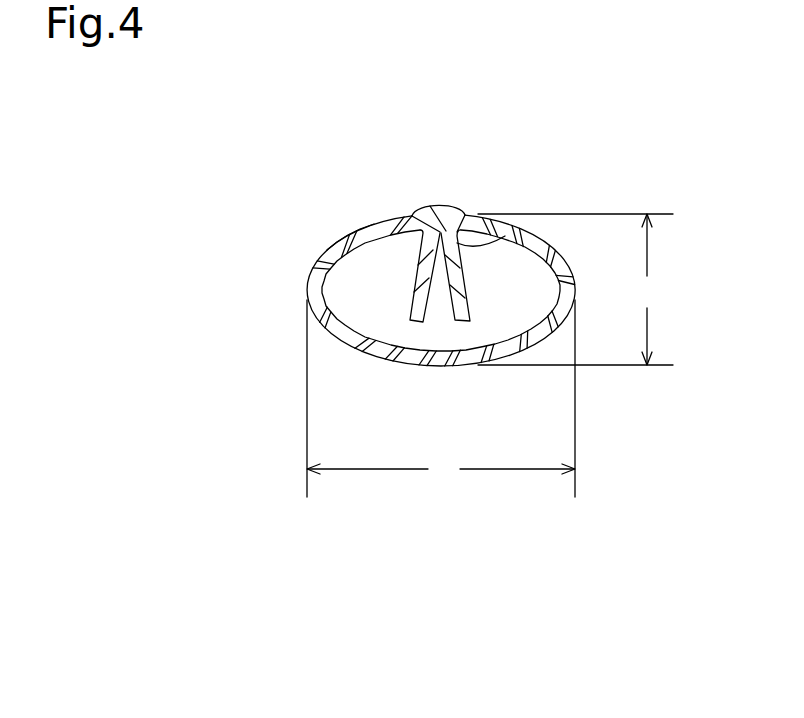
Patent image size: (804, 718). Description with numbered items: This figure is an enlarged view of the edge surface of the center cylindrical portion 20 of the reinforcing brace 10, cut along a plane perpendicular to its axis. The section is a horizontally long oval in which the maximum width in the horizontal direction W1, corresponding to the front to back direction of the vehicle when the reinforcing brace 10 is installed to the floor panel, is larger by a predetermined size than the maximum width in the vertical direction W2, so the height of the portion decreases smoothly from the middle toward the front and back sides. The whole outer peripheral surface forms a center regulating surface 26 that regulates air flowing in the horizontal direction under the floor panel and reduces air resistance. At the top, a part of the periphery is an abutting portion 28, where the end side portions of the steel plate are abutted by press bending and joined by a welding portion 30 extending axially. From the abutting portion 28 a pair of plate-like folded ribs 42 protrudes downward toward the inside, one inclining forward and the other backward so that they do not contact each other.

The reinforcing brace 10 is at (348, 208).
The center cylindrical portion 20 is at (547, 235).
The center regulating surface 26 is at (330, 248).
The abutting portion 28 is at (513, 230).
The welding portion 30 is at (438, 210).
The folded ribs 42 is at (417, 277).
The maximum width in a horizontal direction W1 is at (441, 398).
The maximum width in a vertical direction W2 is at (575, 289).